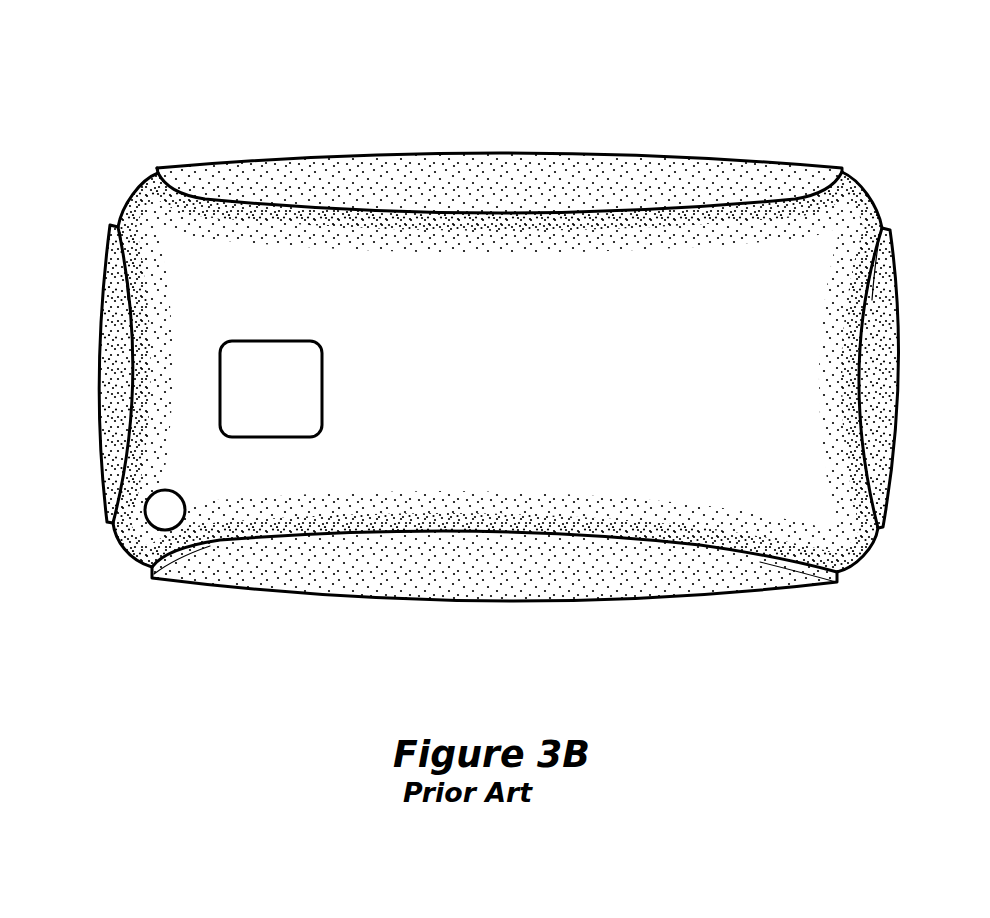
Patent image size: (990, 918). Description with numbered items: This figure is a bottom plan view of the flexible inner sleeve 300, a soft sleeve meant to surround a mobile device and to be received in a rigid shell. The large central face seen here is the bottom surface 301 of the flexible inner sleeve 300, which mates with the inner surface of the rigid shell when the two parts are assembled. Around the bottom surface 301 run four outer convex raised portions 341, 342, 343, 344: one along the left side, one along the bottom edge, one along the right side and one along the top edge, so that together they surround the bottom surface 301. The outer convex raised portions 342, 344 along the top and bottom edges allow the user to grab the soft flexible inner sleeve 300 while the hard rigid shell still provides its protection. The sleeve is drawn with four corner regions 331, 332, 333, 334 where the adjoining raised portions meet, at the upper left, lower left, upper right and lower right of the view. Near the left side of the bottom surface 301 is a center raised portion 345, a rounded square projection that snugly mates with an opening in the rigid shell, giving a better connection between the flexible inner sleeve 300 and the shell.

The flexible inner sleeve 300 is at (648, 120).
The bottom surface 301 is at (632, 355).
The first corner 331 is at (141, 190).
The second corner 332 is at (132, 553).
The third corner 333 is at (870, 200).
The fourth corner 334 is at (862, 557).
The outer convex raised portion 341 is at (132, 336).
The outer convex raised portion 342 is at (495, 533).
The outer convex raised portion 343 is at (860, 378).
The outer convex raised portion 344 is at (527, 212).
The center raised portion 345 is at (323, 377).